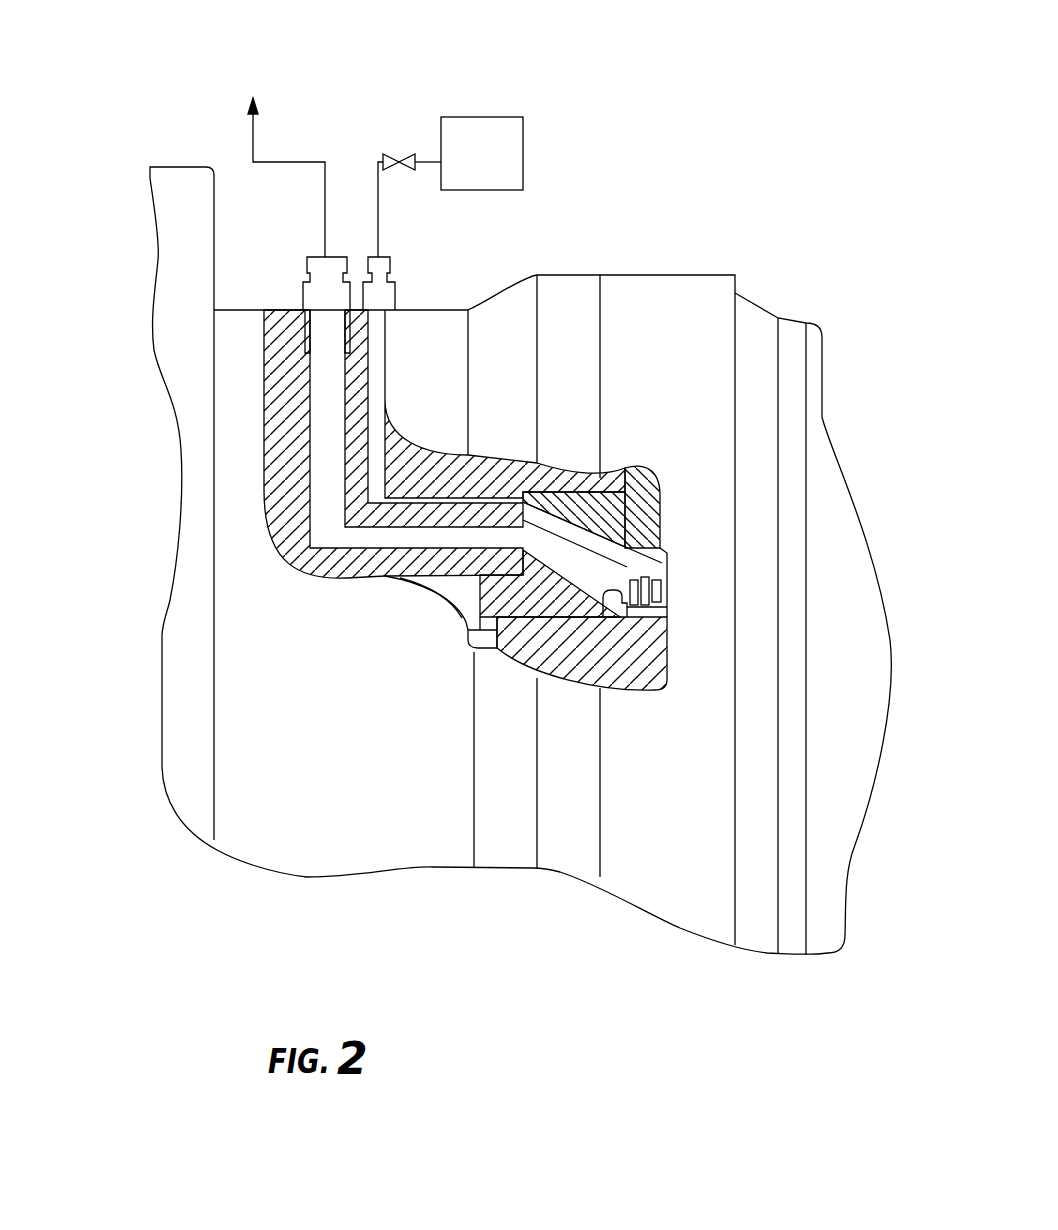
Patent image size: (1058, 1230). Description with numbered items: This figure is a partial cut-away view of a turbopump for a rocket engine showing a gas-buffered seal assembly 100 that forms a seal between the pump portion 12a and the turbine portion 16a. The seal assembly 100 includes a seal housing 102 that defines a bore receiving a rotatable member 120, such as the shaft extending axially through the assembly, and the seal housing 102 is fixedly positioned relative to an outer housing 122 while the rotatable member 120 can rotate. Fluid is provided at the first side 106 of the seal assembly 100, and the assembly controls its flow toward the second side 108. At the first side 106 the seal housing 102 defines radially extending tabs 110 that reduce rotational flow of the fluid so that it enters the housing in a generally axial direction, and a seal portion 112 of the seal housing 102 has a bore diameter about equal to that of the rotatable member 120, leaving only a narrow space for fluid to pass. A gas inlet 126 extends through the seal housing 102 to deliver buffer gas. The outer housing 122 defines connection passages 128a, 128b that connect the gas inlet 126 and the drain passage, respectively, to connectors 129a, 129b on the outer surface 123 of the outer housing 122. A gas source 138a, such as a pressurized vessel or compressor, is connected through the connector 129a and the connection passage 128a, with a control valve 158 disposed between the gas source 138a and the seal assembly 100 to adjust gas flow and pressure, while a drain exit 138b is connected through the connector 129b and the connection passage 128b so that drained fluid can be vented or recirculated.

The pump portion 12a is at (98, 783).
The turbine portion 16a is at (892, 318).
The seal assembly 100 is at (632, 650).
The seal housing 102 is at (568, 475).
The first side 106 is at (437, 595).
The second side 108 is at (675, 536).
The radially extending tabs 110 is at (448, 590).
The seal portion 112 is at (519, 605).
The rotatable member 120 is at (608, 678).
The outer housing 122 is at (383, 580).
The outer surface 123 is at (455, 350).
The gas inlet 126 is at (585, 530).
The connection passage 128a is at (387, 400).
The connection passage 128b is at (310, 412).
The connector 129a is at (397, 290).
The connector 129b is at (303, 290).
The gas source 138a is at (477, 117).
The drain exit 138b is at (276, 161).
The control valve 158 is at (407, 158).